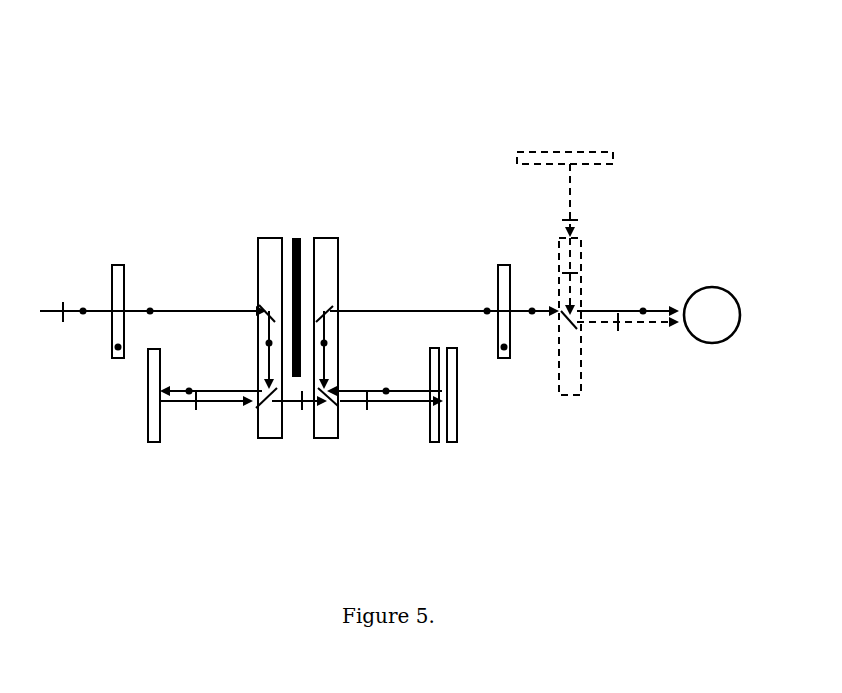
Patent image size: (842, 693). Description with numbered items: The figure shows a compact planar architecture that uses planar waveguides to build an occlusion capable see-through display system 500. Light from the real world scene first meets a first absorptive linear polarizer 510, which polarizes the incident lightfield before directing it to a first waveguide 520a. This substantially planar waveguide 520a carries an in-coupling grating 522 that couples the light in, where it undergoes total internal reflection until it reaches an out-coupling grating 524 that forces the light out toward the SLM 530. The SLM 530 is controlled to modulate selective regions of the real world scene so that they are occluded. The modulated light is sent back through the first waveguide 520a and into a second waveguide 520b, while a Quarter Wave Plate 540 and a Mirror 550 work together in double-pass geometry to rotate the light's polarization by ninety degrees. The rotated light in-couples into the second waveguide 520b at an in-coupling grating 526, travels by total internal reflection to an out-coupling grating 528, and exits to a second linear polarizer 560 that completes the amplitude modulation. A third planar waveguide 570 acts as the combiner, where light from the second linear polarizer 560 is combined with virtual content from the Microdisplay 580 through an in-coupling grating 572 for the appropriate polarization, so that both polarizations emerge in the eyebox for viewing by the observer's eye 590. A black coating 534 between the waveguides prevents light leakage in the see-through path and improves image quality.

The system 500 is at (134, 77).
The first absorptive linear polarizer 510 is at (117, 265).
The first waveguide 520a is at (257, 237).
The second waveguide 520b is at (325, 237).
The in-coupling grating 522 is at (258, 310).
The out-coupling grating 524 is at (257, 410).
The in-coupling grating 526 is at (338, 405).
The out-coupling grating 528 is at (318, 318).
The black coating 534 is at (292, 237).
The SLM 530 is at (148, 443).
The Quarter Wave Plate 540 is at (434, 443).
The Mirror 550 is at (452, 443).
The second linear polarizer 560 is at (504, 265).
The third planar waveguide 570 is at (573, 395).
The in-coupling grating 572 is at (578, 312).
The Microdisplay 580 is at (578, 153).
The observer's eye 590 is at (708, 343).